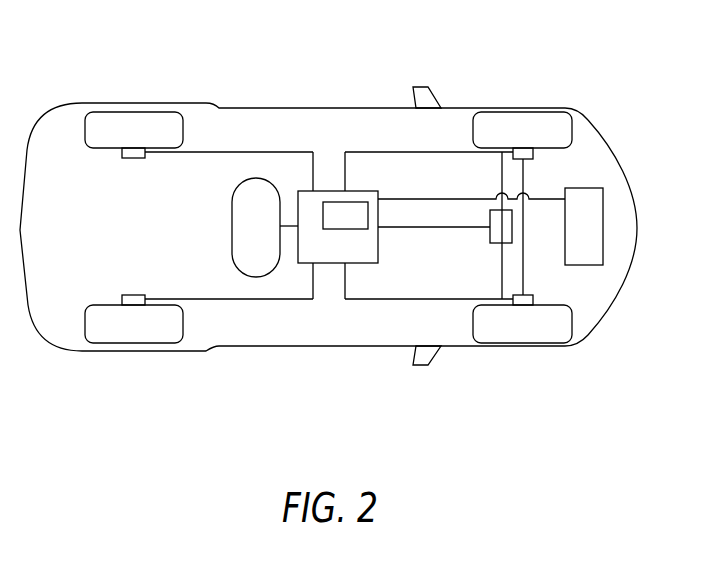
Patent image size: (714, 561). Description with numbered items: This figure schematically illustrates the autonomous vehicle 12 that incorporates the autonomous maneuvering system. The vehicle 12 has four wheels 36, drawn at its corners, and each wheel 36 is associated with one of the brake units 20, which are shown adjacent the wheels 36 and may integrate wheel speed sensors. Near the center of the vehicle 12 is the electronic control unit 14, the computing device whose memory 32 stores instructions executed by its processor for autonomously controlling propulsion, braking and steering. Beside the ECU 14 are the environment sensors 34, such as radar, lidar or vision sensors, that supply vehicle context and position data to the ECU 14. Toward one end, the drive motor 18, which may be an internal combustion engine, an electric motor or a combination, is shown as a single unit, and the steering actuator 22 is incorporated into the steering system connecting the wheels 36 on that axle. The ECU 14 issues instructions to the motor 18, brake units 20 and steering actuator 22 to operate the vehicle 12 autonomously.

The autonomous vehicle 12 is at (596, 124).
The electronic control unit 14 is at (363, 191).
The drive motor 18 is at (603, 206).
The brake units 20 is at (128, 159).
The steering actuator 22 is at (500, 244).
The memory 32 is at (357, 229).
The environment sensors 34 is at (232, 220).
The wheels 36 is at (113, 112).